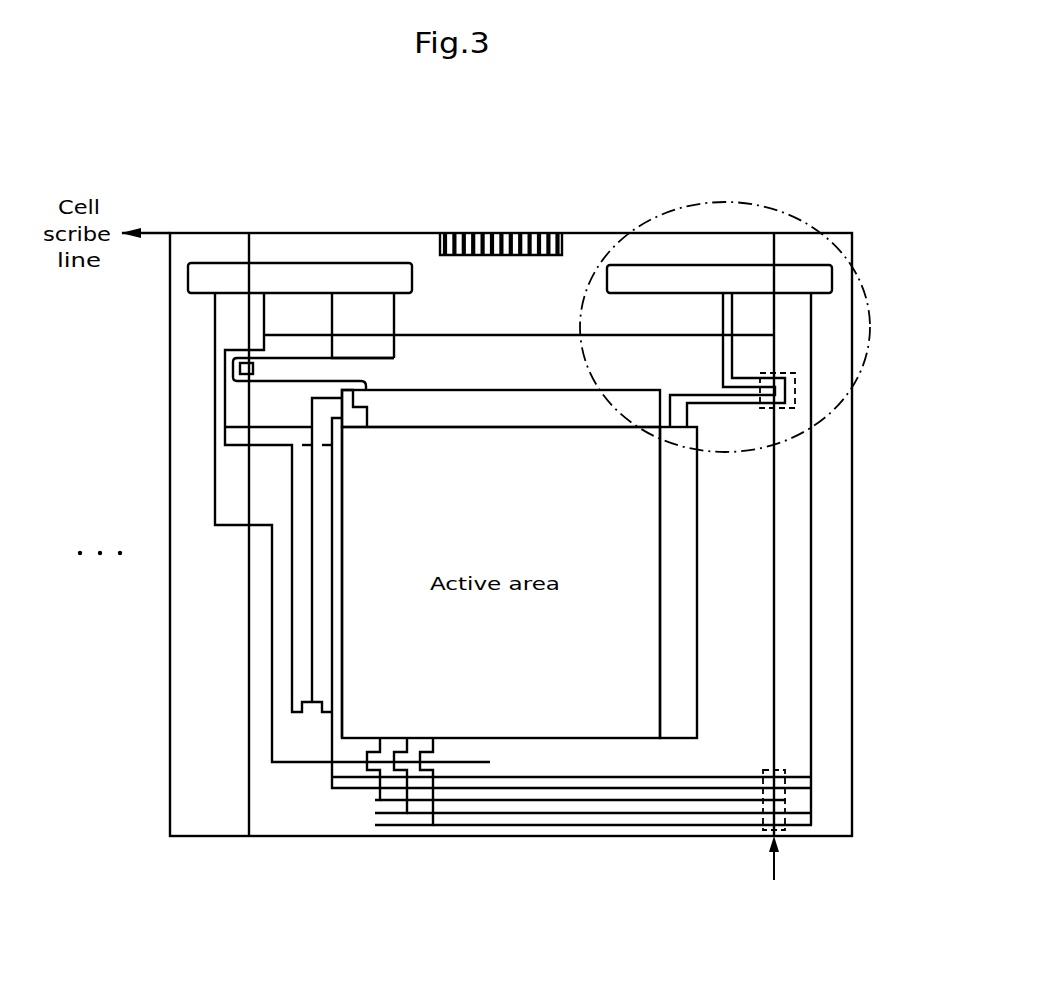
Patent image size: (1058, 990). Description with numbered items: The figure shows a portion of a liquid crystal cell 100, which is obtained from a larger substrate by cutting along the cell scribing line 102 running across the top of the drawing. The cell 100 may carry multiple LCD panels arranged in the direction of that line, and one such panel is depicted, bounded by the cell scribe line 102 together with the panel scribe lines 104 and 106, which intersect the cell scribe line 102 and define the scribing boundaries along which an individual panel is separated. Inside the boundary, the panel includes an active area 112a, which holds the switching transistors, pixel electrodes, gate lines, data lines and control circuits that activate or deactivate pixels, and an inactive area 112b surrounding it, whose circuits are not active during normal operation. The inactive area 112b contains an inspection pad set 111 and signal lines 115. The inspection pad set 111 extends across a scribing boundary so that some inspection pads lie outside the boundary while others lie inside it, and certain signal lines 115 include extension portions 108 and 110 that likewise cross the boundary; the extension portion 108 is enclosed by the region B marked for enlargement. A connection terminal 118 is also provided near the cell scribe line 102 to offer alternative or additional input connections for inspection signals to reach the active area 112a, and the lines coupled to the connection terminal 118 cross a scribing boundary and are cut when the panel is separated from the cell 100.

The liquid crystal cell 100 is at (852, 490).
The cell scribing line 102 is at (310, 232).
The panel scribe line 104 is at (776, 731).
The panel scribe line 106 is at (249, 716).
The extension portion 108 is at (795, 389).
The extension portion 110 is at (786, 810).
The inspection pad set 111 is at (358, 263).
The active area 112a is at (715, 673).
The inactive area 112b is at (587, 280).
The signal lines 115 is at (812, 565).
The connection terminal 118 is at (498, 233).
The region B is at (790, 214).